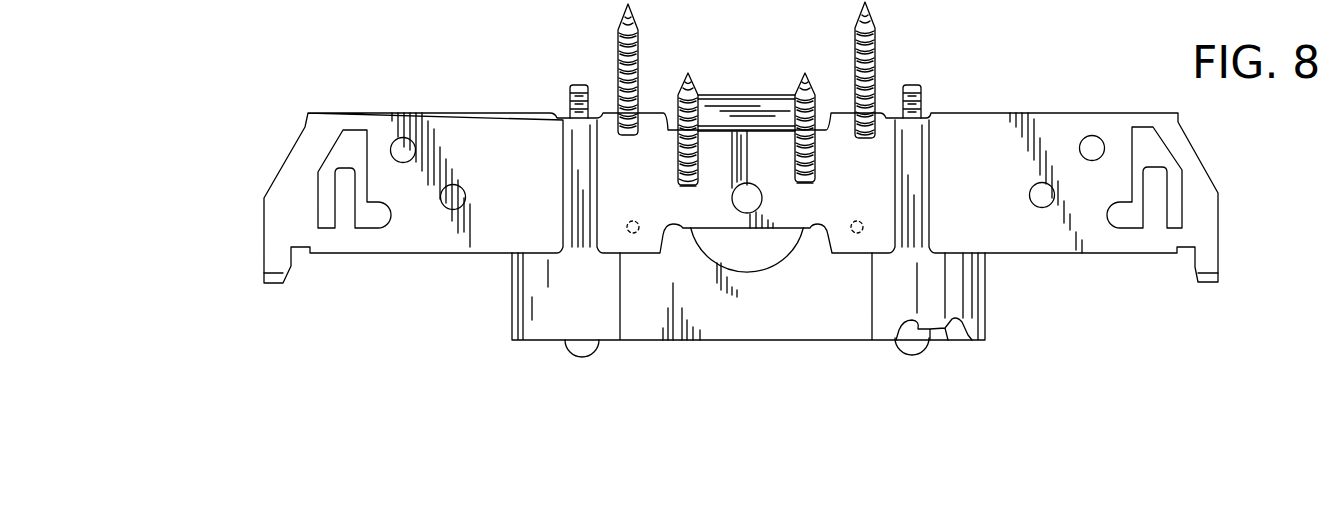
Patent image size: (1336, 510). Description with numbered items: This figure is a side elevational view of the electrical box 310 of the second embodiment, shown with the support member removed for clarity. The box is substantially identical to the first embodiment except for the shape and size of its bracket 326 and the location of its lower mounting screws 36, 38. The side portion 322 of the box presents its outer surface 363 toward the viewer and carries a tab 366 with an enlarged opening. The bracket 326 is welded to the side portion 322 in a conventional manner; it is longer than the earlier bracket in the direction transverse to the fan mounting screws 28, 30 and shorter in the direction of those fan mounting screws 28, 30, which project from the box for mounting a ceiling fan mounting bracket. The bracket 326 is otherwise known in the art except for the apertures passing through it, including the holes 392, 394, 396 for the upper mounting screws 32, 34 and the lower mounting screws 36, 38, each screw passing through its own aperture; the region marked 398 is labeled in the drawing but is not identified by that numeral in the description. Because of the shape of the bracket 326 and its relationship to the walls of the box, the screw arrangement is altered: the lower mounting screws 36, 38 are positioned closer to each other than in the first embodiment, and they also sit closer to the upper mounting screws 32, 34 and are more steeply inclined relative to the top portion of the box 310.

The electrical box 310 is at (292, 98).
The bracket 326 is at (263, 226).
The side portion 322 is at (511, 287).
The outer surface 363 is at (785, 334).
The tab 366 is at (927, 338).
The fan mounting screw 28 is at (569, 100).
The fan mounting screw 30 is at (923, 96).
The upper mounting screw 32 is at (617, 53).
The upper mounting screw 34 is at (877, 43).
The lower mounting screw 36 is at (699, 92).
The lower mounting screw 38 is at (797, 92).
The hole 392 is at (637, 133).
The hole 394 is at (866, 140).
The hole 396 is at (683, 186).
The screw hole 398 is at (818, 186).